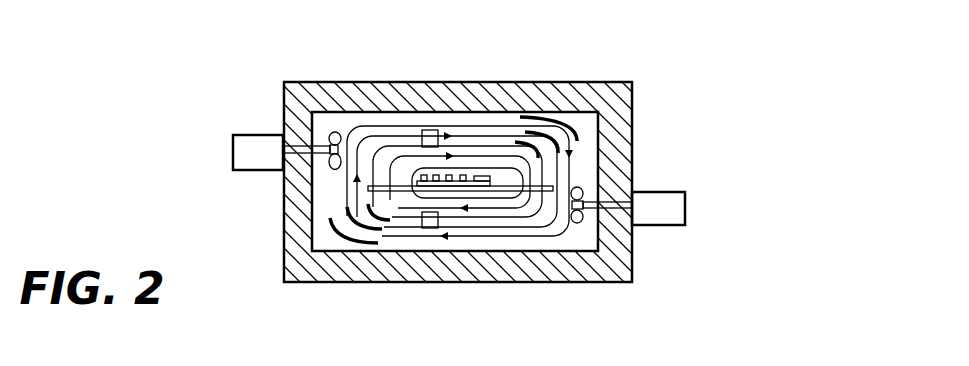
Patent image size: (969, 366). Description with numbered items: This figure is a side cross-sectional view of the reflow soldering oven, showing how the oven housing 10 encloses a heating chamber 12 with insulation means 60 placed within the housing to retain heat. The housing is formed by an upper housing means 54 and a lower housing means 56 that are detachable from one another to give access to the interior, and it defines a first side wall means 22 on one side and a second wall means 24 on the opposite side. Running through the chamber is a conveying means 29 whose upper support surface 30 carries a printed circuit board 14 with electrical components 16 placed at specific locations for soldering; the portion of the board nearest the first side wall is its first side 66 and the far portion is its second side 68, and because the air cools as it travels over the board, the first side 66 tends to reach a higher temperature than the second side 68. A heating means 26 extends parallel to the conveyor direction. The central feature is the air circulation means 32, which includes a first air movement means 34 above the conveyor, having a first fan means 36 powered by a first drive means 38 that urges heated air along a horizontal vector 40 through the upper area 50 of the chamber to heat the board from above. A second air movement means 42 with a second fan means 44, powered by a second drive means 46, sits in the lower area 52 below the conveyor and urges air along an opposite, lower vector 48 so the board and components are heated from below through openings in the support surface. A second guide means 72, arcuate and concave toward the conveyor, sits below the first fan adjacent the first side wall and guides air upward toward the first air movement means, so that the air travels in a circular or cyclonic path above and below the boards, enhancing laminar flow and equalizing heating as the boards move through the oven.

The oven housing 10 is at (633, 88).
The heating chamber 12 is at (682, 36).
The printed circuit board 14 is at (476, 182).
The electrical component 16 is at (460, 176).
The first side wall means 22 is at (287, 213).
The second wall means 24 is at (625, 198).
The heating means 26 is at (425, 130).
The conveying means 29 is at (556, 240).
The upper support surface 30 is at (520, 116).
The air circulation means 32 is at (336, 170).
The first air movement means 34 is at (312, 145).
The first fan means 36 is at (340, 130).
The first drive means 38 is at (233, 140).
The first heated air vector 40 is at (478, 155).
The second air movement means 42 is at (600, 175).
The second fan means 44 is at (600, 245).
The second drive means 46 is at (678, 218).
The second heated air vector 48 is at (430, 196).
The upper area 50 is at (562, 118).
The lower area 52 is at (536, 190).
The upper housing means 54 is at (600, 145).
The lower housing means 56 is at (465, 265).
The insulation means 60 is at (295, 82).
The first side of printed circuit board 66 is at (424, 184).
The second board side 68 is at (482, 184).
The second guide means 72 is at (363, 233).